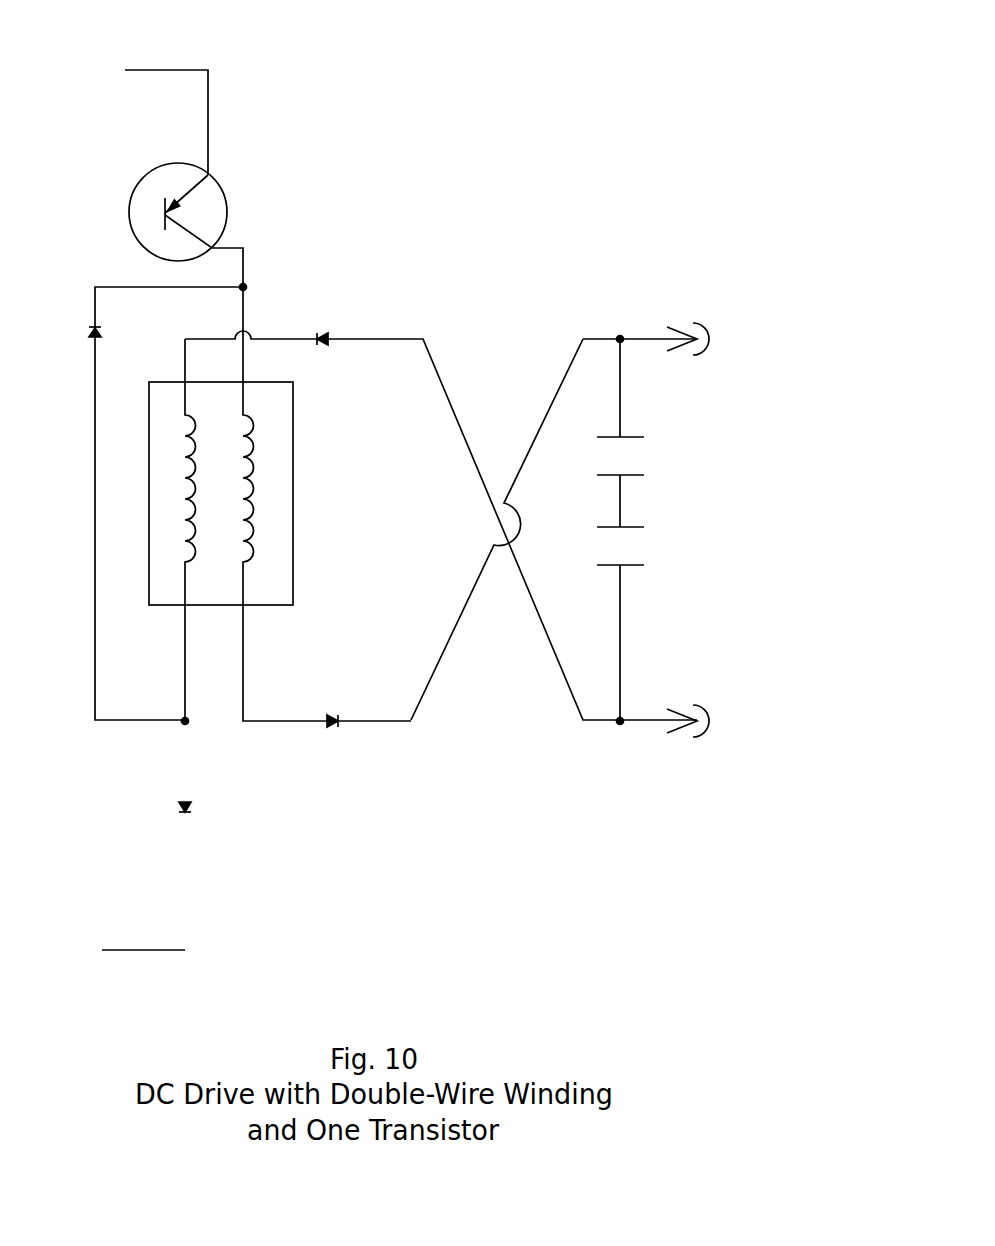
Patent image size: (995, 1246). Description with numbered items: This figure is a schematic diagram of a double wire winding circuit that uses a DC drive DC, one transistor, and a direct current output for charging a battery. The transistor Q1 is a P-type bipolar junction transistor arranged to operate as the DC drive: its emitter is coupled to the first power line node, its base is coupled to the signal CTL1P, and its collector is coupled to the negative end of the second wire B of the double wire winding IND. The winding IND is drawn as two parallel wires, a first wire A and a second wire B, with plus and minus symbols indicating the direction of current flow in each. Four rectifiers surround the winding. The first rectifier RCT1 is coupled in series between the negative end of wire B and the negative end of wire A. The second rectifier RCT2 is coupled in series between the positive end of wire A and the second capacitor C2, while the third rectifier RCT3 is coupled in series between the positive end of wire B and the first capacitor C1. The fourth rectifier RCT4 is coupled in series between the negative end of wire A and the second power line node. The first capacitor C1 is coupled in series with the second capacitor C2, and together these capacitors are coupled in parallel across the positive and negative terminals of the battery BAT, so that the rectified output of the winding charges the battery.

The DC drive DC is at (137, 481).
The transistor Q1 is at (197, 251).
The control signal CTL1P is at (165, 213).
The first rectifier RCT1 is at (59, 332).
The second rectifier RCT2 is at (331, 325).
The third rectifier RCT3 is at (352, 742).
The fourth rectifier RCT4 is at (150, 808).
The double wire winding IND is at (247, 530).
The first wire of the double wire winding A is at (181, 530).
The second wire of the double wire winding B is at (275, 530).
The first capacitor C1 is at (604, 433).
The second capacitor C2 is at (604, 624).
The battery BAT is at (733, 530).